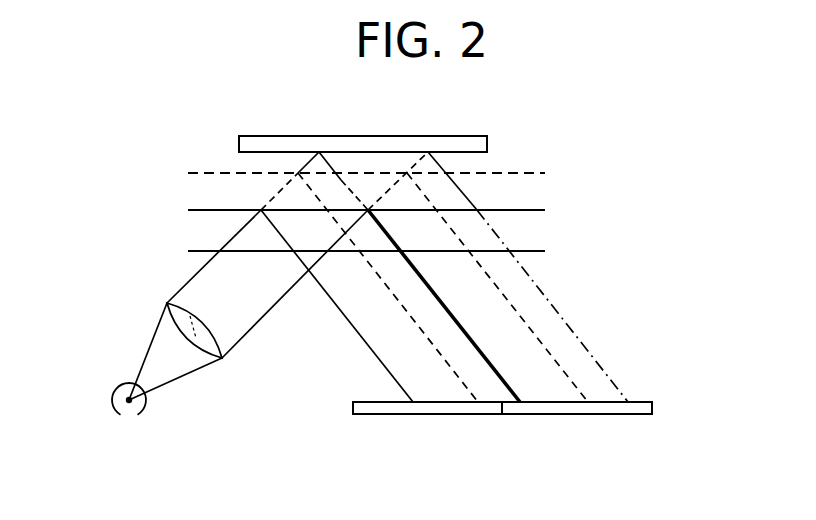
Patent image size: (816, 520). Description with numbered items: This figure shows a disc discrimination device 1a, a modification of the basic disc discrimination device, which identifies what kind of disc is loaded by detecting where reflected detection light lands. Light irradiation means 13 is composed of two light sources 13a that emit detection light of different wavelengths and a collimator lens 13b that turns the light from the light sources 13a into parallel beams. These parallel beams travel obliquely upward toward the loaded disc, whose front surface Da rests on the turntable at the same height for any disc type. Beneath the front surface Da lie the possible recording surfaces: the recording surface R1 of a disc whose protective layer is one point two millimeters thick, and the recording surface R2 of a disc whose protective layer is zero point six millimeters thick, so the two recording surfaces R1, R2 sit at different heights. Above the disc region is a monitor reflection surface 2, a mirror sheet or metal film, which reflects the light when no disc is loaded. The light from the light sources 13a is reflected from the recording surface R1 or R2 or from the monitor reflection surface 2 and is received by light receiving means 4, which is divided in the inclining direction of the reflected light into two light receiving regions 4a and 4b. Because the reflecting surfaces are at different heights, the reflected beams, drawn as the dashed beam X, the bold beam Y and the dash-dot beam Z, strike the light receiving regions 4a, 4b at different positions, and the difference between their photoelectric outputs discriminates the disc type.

The monitor reflection surface 2 is at (369, 150).
The disc discrimination device 1a is at (562, 153).
The recording surface R1 is at (522, 174).
The recording surface R2 is at (522, 211).
The front surface of the disc Da is at (522, 252).
The light reflected from R1 X is at (500, 292).
The light reflected from R2 Y is at (420, 278).
The light reflected from plate Z is at (488, 352).
The light irradiation means 13 is at (185, 386).
The light sources 13a is at (118, 390).
The collimator lens 13b is at (222, 342).
The light receiving means 4 is at (502, 452).
The light receiving region 4a is at (550, 413).
The light receiving region 4b is at (437, 412).